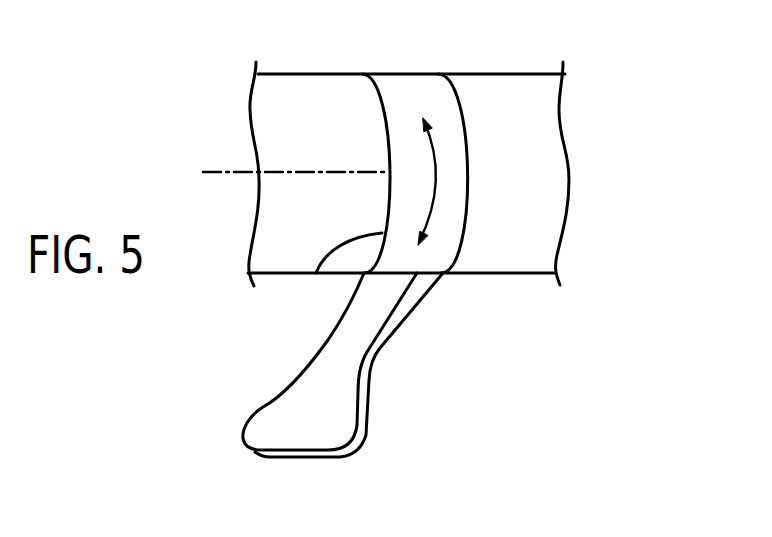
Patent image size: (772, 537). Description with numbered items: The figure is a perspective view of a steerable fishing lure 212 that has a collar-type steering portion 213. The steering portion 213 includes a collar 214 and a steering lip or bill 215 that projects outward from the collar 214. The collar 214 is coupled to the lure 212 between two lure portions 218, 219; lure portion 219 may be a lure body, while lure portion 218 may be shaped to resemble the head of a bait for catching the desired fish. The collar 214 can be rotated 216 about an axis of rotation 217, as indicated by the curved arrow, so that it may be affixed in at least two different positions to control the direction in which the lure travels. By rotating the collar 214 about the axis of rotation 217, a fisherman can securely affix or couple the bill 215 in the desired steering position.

The steerable fishing lure 212 is at (517, 340).
The steering portion 213 is at (378, 57).
The collar 214 is at (316, 273).
The steering lip or bill 215 is at (290, 458).
The rotation 216 is at (434, 180).
The axis of rotation 217 is at (227, 168).
The lure portion 218 is at (275, 273).
The lure portion 219 is at (500, 73).